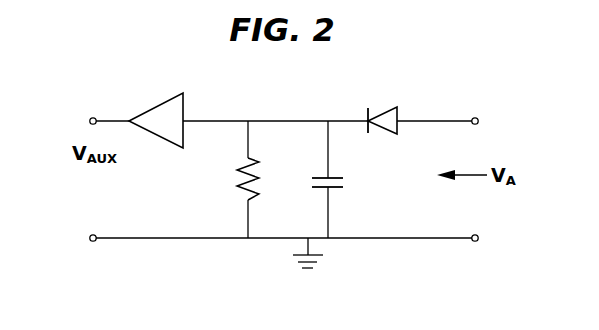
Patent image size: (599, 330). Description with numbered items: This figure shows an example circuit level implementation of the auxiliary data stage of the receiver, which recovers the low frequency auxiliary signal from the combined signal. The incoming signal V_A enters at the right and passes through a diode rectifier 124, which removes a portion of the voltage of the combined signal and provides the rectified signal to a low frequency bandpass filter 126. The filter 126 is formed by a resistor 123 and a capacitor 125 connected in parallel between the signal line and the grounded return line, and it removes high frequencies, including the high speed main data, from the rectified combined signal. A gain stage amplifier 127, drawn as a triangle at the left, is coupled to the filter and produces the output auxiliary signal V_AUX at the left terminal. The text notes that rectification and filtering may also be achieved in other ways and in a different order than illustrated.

The buffer amplifier 127 is at (158, 102).
The diode rectifier 124 is at (380, 108).
The resistor 123 is at (237, 185).
The capacitor 125 is at (316, 188).
The low frequency bandpass filter 126 is at (266, 252).